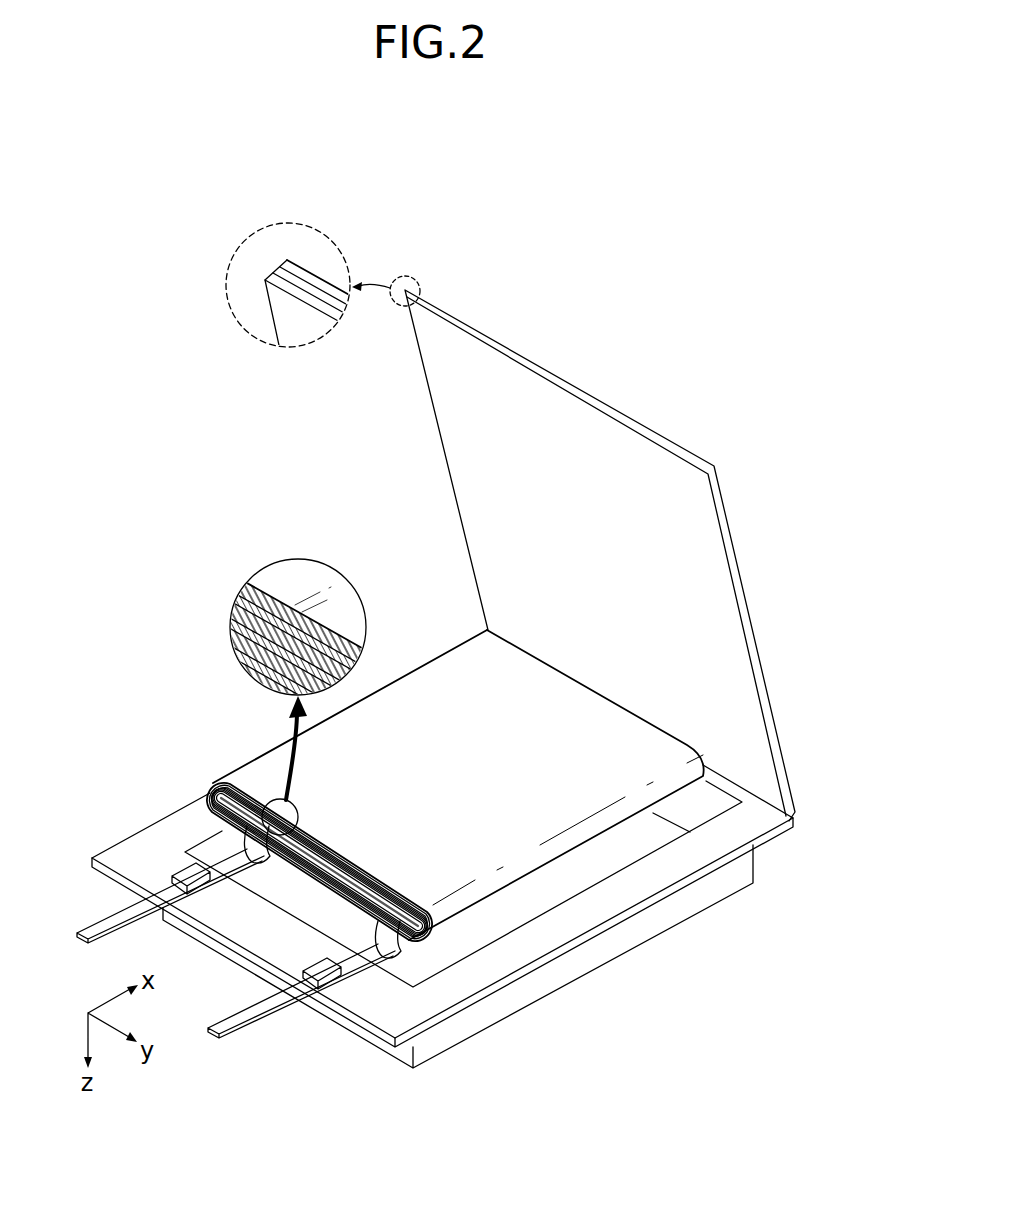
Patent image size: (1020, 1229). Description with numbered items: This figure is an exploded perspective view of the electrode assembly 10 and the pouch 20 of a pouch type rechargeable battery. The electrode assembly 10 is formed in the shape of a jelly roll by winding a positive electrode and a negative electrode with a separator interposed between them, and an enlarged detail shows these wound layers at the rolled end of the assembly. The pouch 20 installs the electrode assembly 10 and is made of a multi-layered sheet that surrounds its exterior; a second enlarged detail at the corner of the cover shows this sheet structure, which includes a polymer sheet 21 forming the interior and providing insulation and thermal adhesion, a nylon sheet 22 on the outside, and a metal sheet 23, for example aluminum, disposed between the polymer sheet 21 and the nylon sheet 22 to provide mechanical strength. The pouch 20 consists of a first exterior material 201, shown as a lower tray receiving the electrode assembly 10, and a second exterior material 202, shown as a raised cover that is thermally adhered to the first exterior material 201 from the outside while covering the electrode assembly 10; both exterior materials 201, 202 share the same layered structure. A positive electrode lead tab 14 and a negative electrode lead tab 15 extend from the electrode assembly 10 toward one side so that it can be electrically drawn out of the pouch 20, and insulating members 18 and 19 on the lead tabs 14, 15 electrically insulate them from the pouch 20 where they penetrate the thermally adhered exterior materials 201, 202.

The electrode assembly 10 is at (578, 656).
The positive electrode lead tab 14 is at (103, 925).
The negative electrode lead tab 15 is at (238, 1022).
The insulating member 18 is at (188, 870).
The insulating member 19 is at (326, 972).
The pouch 20 is at (308, 242).
The polymer sheet 21 is at (282, 270).
The nylon sheet 22 is at (322, 283).
The metal sheet 23 is at (302, 289).
The first exterior material 201 is at (545, 960).
The second exterior material 202 is at (445, 462).